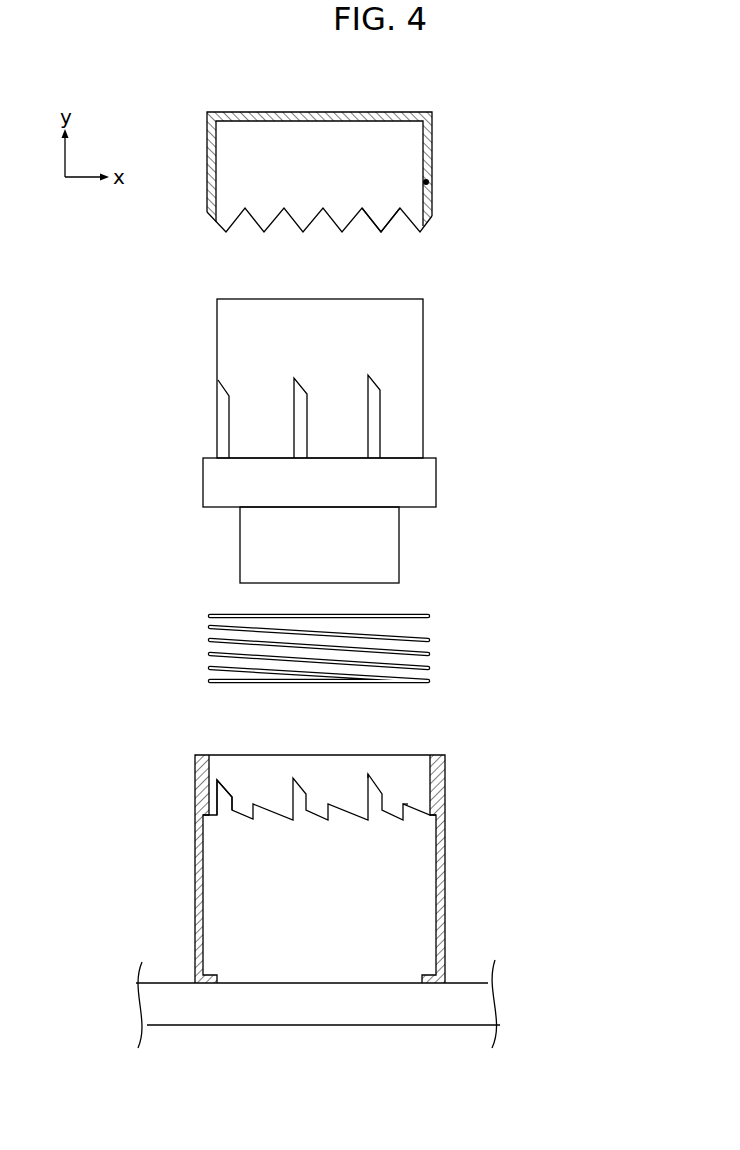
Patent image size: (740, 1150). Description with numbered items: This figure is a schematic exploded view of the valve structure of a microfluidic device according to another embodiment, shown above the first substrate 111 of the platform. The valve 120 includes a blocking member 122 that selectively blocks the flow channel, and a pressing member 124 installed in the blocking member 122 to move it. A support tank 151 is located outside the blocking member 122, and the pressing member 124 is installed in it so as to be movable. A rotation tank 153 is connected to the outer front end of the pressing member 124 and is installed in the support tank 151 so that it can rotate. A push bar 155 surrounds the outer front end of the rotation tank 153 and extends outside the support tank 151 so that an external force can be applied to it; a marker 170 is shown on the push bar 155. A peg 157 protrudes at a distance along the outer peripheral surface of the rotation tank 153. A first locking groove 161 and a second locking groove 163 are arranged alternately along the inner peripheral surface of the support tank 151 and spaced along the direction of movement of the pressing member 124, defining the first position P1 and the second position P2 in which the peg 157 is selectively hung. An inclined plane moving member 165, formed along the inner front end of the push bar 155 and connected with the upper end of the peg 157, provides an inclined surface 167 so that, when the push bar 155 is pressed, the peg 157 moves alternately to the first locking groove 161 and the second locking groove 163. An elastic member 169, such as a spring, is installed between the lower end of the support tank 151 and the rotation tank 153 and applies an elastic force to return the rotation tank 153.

The first substrate 111 is at (282, 1025).
The valve 120 is at (350, 441).
The blocking member 122 is at (322, 1008).
The pressing member 124 is at (390, 548).
The support tank 151 is at (334, 869).
The rotation tank 153 is at (423, 378).
The push bar 155 is at (362, 184).
The peg 157 is at (225, 425).
The first locking groove 161 is at (267, 815).
The second locking groove 163 is at (225, 803).
The inclined plane moving member 165 is at (382, 218).
The inclined surface 167 is at (372, 220).
The elastic member 169 is at (430, 655).
The marker 170 is at (429, 182).
The first position P1 is at (403, 804).
The second position P2 is at (368, 773).